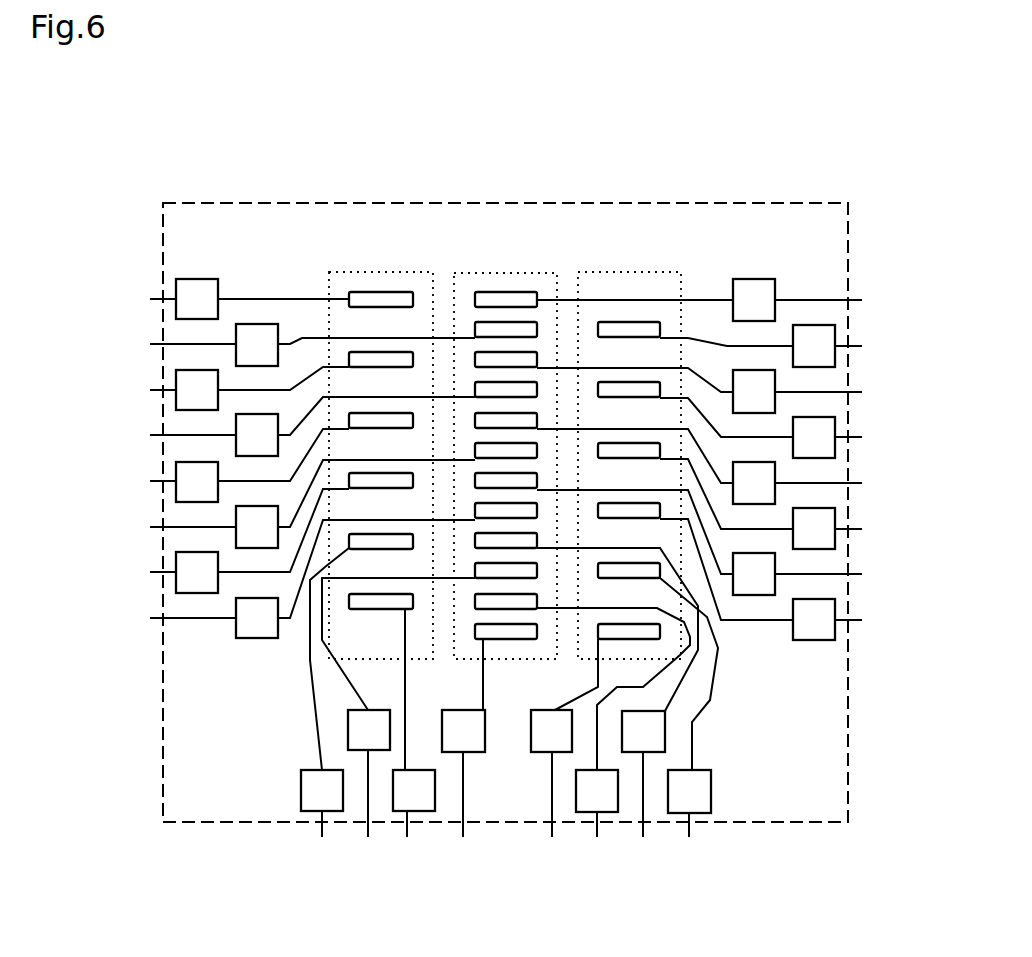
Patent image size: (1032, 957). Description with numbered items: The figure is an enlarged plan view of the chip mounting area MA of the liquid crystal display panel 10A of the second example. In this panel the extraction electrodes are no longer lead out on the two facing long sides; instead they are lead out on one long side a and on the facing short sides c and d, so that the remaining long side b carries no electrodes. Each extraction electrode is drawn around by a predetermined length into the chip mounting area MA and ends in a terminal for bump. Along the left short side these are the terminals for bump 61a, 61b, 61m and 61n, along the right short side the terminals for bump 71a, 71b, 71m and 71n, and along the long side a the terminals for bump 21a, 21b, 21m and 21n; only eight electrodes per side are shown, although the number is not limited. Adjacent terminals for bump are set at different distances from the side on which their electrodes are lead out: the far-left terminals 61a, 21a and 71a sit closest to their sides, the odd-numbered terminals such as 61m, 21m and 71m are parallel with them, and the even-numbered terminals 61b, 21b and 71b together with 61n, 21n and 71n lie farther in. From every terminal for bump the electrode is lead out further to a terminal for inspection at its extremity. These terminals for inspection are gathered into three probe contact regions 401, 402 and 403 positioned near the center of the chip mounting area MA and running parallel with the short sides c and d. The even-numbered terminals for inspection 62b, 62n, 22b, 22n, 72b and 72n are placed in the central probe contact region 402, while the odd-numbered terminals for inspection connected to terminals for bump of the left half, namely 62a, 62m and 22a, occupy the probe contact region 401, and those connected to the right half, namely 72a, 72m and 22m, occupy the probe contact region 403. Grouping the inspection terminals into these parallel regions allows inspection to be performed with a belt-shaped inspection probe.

The liquid crystal display panel 10A is at (208, 78).
The chip mounting area MA is at (315, 200).
The terminal for bump 61a is at (190, 279).
The terminal for bump 61b is at (250, 324).
The terminal for bump 61m is at (197, 593).
The terminal for bump 61n is at (252, 638).
The terminal for inspection 62a is at (385, 292).
The terminal for inspection 62b is at (476, 322).
The terminal for inspection 62m is at (371, 473).
The terminal for inspection 62n is at (475, 509).
The terminal for inspection 72n is at (527, 292).
The terminal for inspection 72m is at (630, 322).
The terminal for inspection 72b is at (537, 476).
The terminal for inspection 72a is at (638, 519).
The terminal for bump 71n is at (742, 279).
The terminal for bump 71m is at (813, 325).
The terminal for bump 71b is at (777, 582).
The terminal for bump 71a is at (818, 641).
The terminal for inspection 22a is at (349, 543).
The terminal for inspection 22b is at (482, 579).
The terminal for inspection 22m is at (706, 616).
The terminal for inspection 22n is at (475, 539).
The terminal for bump 21a is at (301, 797).
The terminal for bump 21b is at (355, 750).
The terminal for bump 21m is at (647, 752).
The terminal for bump 21n is at (713, 793).
The probe contact region 401 is at (307, 668).
The probe contact region 402 is at (523, 657).
The probe contact region 403 is at (723, 655).
The long side a is at (521, 826).
The long side b is at (507, 200).
The short side c is at (160, 806).
The short side d is at (853, 797).